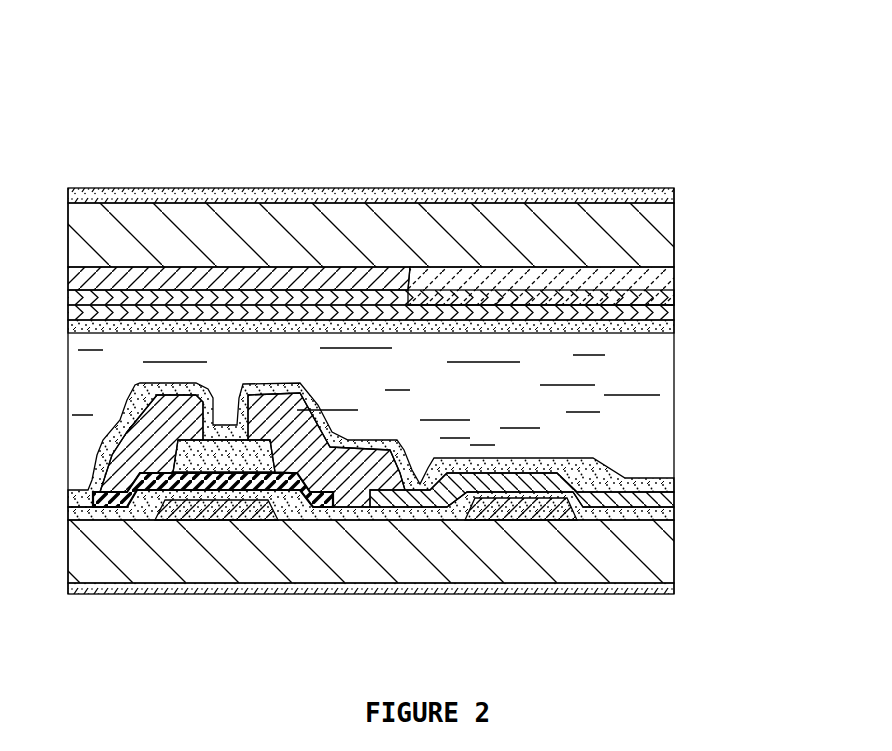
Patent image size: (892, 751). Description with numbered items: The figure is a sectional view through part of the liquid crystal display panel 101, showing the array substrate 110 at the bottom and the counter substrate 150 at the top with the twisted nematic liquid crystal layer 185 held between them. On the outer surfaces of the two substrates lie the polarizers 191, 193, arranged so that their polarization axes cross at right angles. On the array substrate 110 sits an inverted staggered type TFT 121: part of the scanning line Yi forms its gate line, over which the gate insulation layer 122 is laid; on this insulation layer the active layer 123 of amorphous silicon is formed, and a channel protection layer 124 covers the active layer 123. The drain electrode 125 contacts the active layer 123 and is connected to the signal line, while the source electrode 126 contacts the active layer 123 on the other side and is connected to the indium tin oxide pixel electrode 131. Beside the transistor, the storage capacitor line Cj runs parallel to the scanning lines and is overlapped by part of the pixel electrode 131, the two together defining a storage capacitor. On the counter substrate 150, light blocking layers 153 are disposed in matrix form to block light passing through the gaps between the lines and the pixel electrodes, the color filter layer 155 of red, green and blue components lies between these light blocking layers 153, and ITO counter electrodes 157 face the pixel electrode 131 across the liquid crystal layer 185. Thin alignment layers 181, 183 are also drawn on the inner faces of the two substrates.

The liquid crystal display panel 101 is at (590, 93).
The array substrate 110 is at (686, 552).
The TFT 121 is at (259, 498).
The gate insulation layer 122 is at (375, 507).
The active layer 123 is at (268, 507).
The channel protection layer 124 is at (220, 403).
The drain electrode 125 is at (150, 445).
The source electrode 126 is at (352, 445).
The pixel electrode 131 is at (490, 468).
The counter substrate 150 is at (688, 228).
The light blocking layer 153 is at (300, 278).
The color filter layer 155 is at (505, 290).
The counter electrode 157 is at (550, 312).
The alignment film 181 is at (665, 478).
The alignment film 183 is at (655, 330).
The liquid crystal layer 185 is at (655, 387).
The polarizer 191 is at (672, 592).
The polarizer 193 is at (668, 188).
The scanning line Yi is at (213, 521).
The storage capacitor line Cj is at (500, 510).